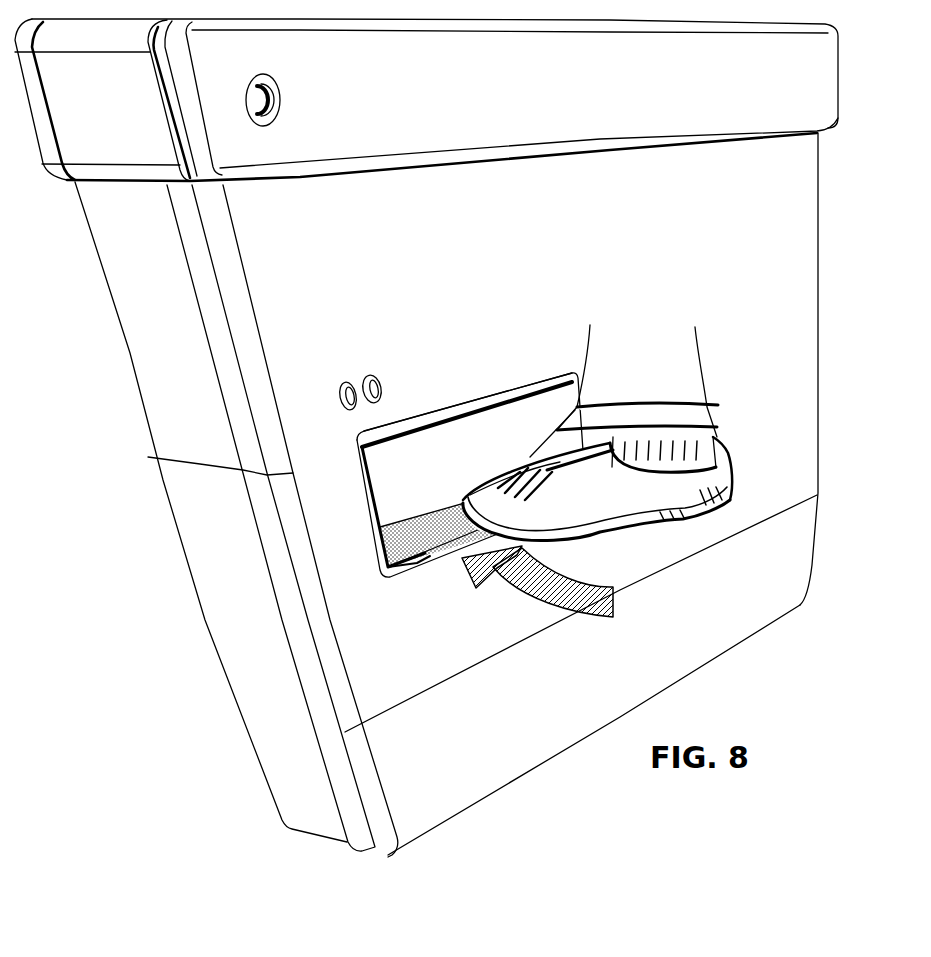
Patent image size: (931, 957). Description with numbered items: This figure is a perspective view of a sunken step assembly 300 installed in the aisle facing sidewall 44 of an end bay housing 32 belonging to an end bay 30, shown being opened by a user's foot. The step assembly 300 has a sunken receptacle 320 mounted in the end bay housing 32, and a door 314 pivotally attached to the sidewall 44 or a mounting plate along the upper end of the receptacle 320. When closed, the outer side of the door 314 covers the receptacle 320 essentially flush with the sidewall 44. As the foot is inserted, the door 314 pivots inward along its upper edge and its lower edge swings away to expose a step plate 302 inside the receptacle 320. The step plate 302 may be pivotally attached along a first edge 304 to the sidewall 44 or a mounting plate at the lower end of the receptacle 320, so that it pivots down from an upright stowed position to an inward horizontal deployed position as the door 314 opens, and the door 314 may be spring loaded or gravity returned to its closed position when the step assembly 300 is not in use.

The end bay 30 is at (543, 803).
The end bay housing 32 is at (797, 615).
The aisle facing sidewall 44 is at (793, 293).
The step assembly 300 is at (476, 430).
The step plate 302 is at (382, 533).
The first edge 304 is at (417, 563).
The door 314 is at (523, 420).
The sunken receptacle 320 is at (393, 467).